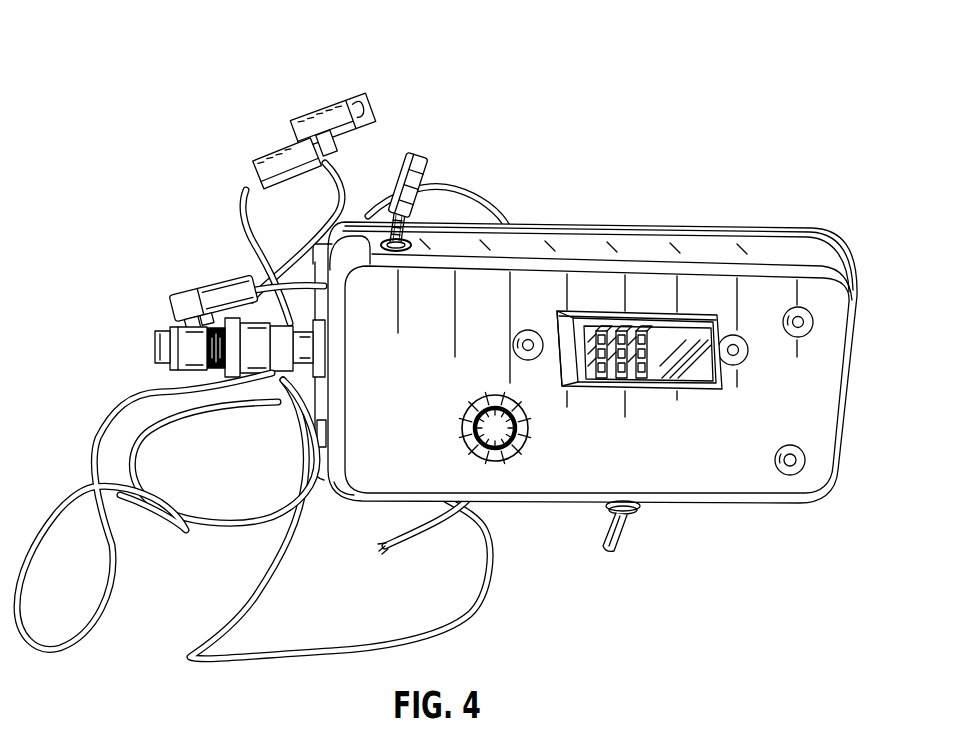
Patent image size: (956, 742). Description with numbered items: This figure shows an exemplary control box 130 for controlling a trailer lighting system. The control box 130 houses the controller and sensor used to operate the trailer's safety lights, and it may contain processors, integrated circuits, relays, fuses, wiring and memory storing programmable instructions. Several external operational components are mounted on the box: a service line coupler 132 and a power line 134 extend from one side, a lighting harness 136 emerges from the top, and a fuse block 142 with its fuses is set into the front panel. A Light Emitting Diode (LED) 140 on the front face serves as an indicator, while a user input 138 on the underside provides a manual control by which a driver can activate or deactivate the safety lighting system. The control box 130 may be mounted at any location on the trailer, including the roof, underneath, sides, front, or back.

The control box 130 is at (146, 57).
The service line coupler 132 is at (122, 330).
The power line 134 is at (203, 290).
The lighting harness 136 is at (418, 157).
The user input 138 is at (622, 536).
The Light Emitting Diode (LED) 140 is at (495, 442).
The fuse block 142 is at (660, 343).